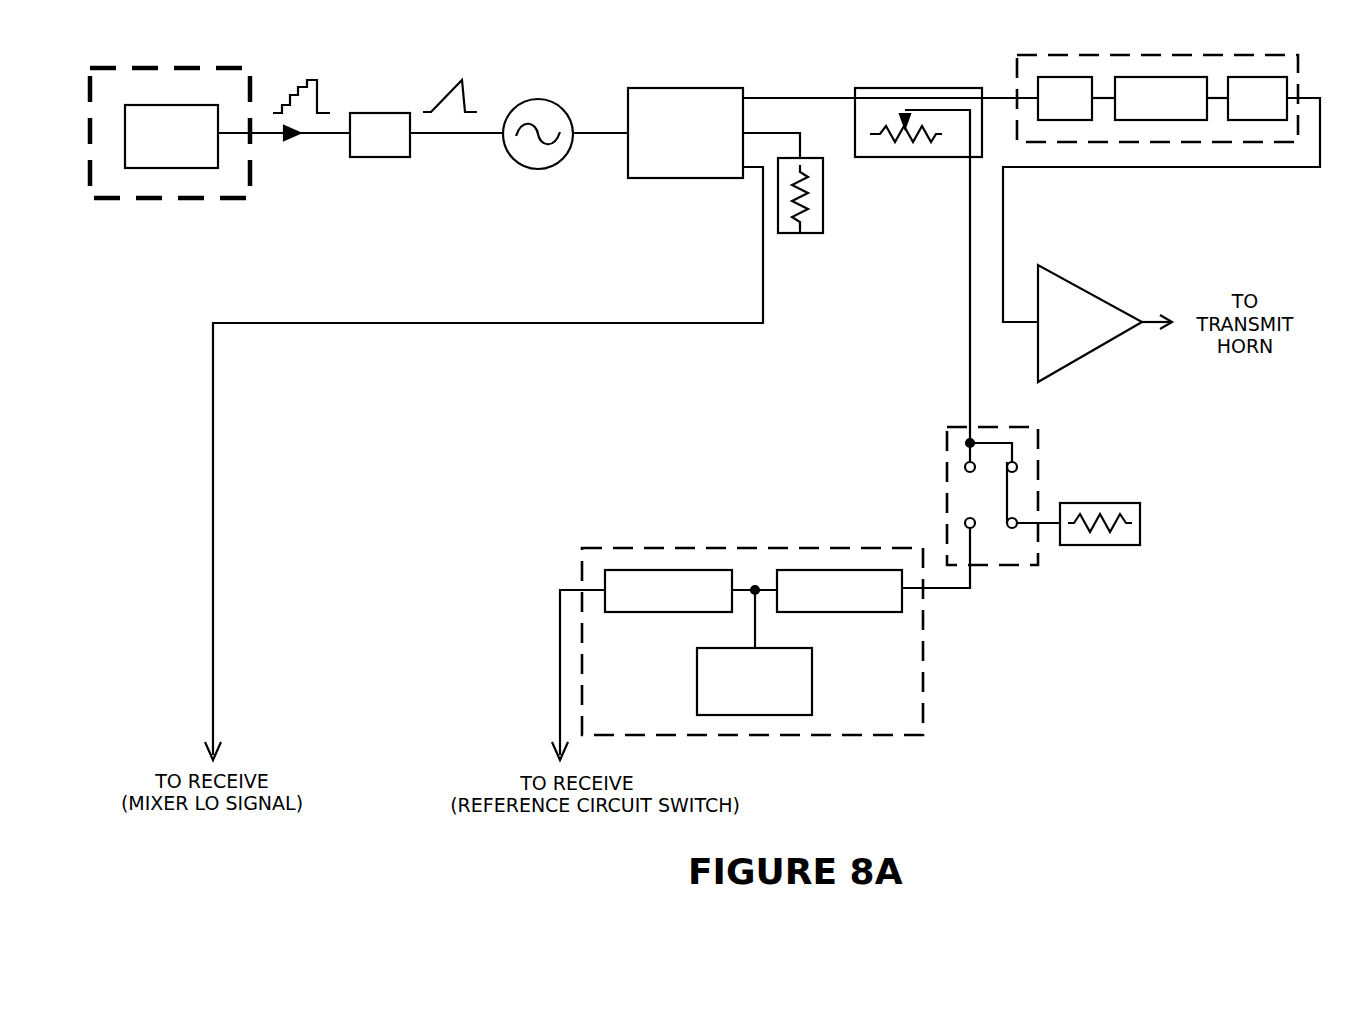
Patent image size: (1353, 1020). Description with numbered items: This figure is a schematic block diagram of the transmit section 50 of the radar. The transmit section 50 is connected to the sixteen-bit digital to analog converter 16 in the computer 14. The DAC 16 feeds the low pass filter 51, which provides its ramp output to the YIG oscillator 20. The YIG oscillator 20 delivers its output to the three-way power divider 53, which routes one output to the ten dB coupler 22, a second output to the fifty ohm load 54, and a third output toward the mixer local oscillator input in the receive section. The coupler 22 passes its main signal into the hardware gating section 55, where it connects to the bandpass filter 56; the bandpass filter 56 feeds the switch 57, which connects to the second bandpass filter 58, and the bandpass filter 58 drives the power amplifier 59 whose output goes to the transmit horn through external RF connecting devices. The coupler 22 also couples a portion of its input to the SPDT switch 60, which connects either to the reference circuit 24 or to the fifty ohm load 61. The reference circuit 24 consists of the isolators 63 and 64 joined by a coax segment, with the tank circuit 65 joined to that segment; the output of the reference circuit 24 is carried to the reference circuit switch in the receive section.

The computer 14 is at (176, 198).
The 16 bit digital to analog converter 16 is at (220, 150).
The low pass filter 51 is at (374, 157).
The YIG oscillator 20 is at (510, 153).
The 3-way power divider 53 is at (684, 178).
The transmit section 50 is at (730, 72).
The 50 ohm load 54 is at (823, 225).
The 10 dB coupler 22 is at (927, 157).
The hardware gating section 55 is at (1020, 56).
The bandpass filter 56 is at (1068, 120).
The switch 57 is at (1195, 120).
The second bandpass filter 58 is at (1290, 86).
The power amplifier 59 is at (1113, 307).
The switch 60 is at (1038, 450).
The 50 ohm load 61 is at (1127, 503).
The reference circuit 24 is at (925, 720).
The isolator 63 is at (605, 574).
The isolator 64 is at (903, 600).
The tank circuit 65 is at (767, 715).